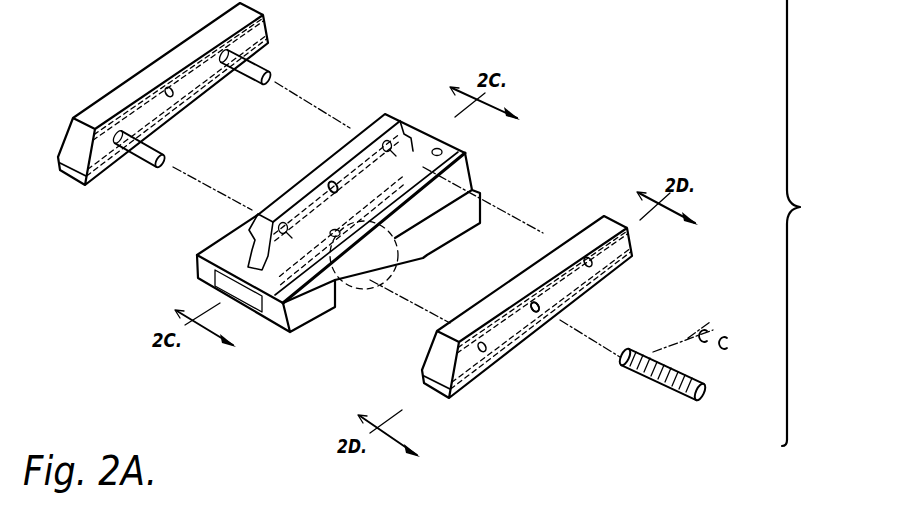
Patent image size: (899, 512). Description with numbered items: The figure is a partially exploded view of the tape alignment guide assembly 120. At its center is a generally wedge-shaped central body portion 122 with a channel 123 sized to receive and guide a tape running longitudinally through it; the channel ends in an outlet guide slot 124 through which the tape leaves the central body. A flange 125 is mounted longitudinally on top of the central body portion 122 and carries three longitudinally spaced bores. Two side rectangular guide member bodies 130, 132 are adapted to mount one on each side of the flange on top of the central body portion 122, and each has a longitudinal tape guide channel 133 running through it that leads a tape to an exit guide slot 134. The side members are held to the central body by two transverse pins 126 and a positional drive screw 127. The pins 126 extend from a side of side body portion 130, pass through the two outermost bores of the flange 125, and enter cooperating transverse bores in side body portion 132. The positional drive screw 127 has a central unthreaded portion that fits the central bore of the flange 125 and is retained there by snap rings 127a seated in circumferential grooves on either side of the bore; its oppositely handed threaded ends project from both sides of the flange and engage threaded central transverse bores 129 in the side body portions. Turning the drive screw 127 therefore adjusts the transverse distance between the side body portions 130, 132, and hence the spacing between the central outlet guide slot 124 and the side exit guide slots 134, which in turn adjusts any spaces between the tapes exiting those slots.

The tape alignment guide assembly 120 is at (814, 223).
The central generally wedge-shaped body portion 122 is at (465, 150).
The channel 123 is at (405, 277).
The outlet guide slot 124 is at (245, 288).
The flange 125 is at (347, 150).
The transverse pins 126 is at (270, 78).
The positional drive screw 127 is at (655, 382).
The snap rings 127a is at (724, 338).
The threaded central transverse bores 129 is at (545, 302).
The side rectangular guide member body 130 is at (249, 38).
The side rectangular guide member body 132 is at (605, 257).
The longitudinal tape guide channel 133 is at (145, 125).
The exit guide slot 134 is at (74, 176).